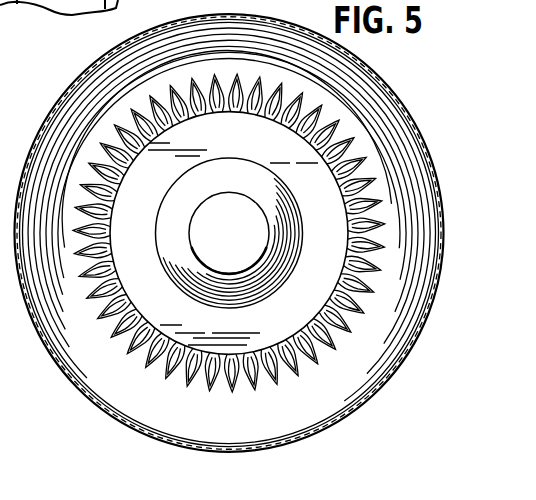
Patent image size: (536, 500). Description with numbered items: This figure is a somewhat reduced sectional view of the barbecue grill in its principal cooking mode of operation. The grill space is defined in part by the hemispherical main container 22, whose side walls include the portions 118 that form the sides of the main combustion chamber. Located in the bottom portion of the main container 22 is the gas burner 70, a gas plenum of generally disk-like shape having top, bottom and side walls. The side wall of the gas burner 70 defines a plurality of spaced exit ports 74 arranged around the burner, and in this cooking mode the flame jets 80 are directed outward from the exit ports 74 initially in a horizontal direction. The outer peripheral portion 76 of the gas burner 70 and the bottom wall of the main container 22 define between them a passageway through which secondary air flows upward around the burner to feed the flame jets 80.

The main container 22 is at (368, 406).
The portions of side walls 118 is at (394, 97).
The gas burner 70 is at (198, 200).
The exit ports 74 is at (213, 112).
The outer peripheral portion 76 is at (336, 172).
The flame jets 80 is at (154, 355).